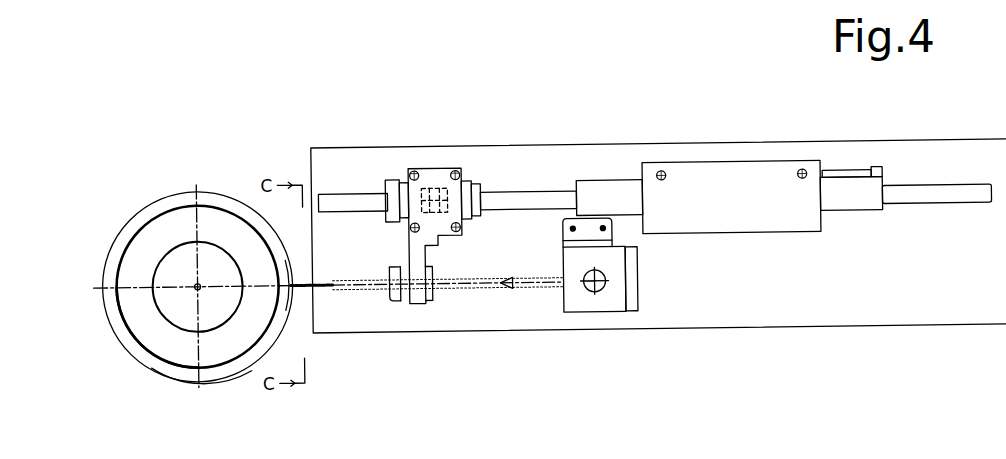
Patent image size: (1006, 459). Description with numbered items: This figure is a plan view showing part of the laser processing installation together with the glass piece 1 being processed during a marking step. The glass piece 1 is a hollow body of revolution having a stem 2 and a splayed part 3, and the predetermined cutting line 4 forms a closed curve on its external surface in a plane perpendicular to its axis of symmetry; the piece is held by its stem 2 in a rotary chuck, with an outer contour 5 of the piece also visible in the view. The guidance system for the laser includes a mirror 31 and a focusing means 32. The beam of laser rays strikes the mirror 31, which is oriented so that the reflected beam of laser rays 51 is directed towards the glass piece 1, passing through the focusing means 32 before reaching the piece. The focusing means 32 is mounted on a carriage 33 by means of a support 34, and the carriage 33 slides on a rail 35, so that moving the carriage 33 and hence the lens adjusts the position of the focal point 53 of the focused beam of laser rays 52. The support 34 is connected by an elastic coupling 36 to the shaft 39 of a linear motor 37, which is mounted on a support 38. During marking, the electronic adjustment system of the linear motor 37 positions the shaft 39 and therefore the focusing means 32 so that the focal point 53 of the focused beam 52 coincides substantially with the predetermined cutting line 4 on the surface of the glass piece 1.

The glass piece 1 is at (106, 235).
The stem 2 is at (180, 263).
The splayed part 3 is at (153, 337).
The predetermined cutting line 4 is at (220, 367).
The tire ring 5 is at (270, 337).
The focal point 53 is at (282, 280).
The mirror 31 is at (612, 286).
The focusing means 32 is at (392, 292).
The carriage 33 is at (390, 190).
The support 34 is at (418, 251).
The rail 35 is at (343, 205).
The elastic coupling 36 is at (433, 190).
The linear motor 37 is at (855, 205).
The support 38 is at (721, 211).
The shaft 39 is at (515, 200).
The reflected beam of laser rays 51 is at (490, 290).
The focused beam of laser rays 52 is at (338, 298).